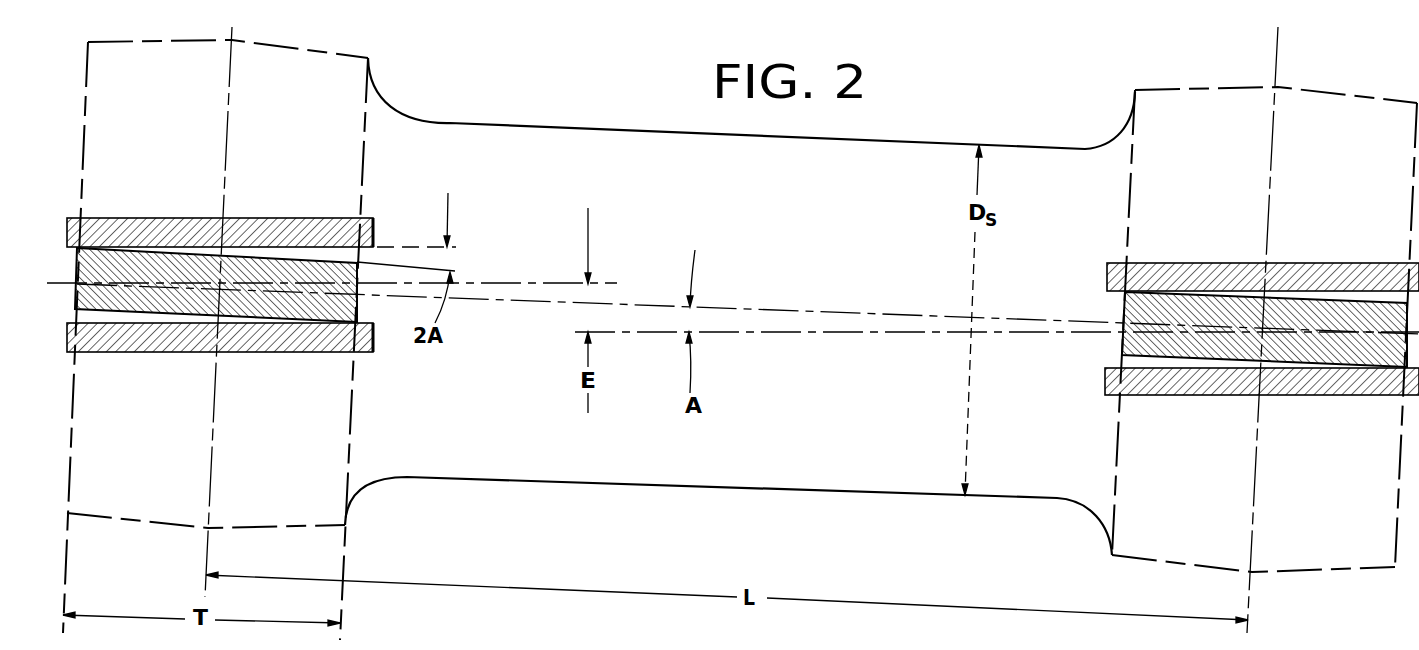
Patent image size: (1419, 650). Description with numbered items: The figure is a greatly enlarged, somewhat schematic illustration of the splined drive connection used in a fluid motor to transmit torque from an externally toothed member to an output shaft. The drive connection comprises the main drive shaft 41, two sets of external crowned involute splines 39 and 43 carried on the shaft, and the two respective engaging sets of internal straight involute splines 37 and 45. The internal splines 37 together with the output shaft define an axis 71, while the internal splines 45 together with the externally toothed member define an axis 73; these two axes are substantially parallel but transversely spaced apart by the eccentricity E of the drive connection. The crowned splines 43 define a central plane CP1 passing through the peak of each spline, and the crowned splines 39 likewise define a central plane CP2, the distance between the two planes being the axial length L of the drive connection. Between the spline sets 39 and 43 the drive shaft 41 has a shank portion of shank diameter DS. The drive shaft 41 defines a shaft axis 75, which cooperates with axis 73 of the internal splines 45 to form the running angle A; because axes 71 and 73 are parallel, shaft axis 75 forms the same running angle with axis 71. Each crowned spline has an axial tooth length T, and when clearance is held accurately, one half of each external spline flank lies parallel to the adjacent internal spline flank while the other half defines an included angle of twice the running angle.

The internal straight involute splines 37 is at (183, 232).
The external crowned involute splines 39 is at (337, 305).
The main drive shaft 41 is at (633, 150).
The external crowned involute splines 43 is at (1143, 308).
The internal straight involute splines 45 is at (1240, 278).
The axis 71 is at (555, 284).
The axis 73 is at (890, 333).
The shaft axis 75 is at (817, 308).
The central plane CP1 is at (1277, 133).
The central plane CP2 is at (230, 110).